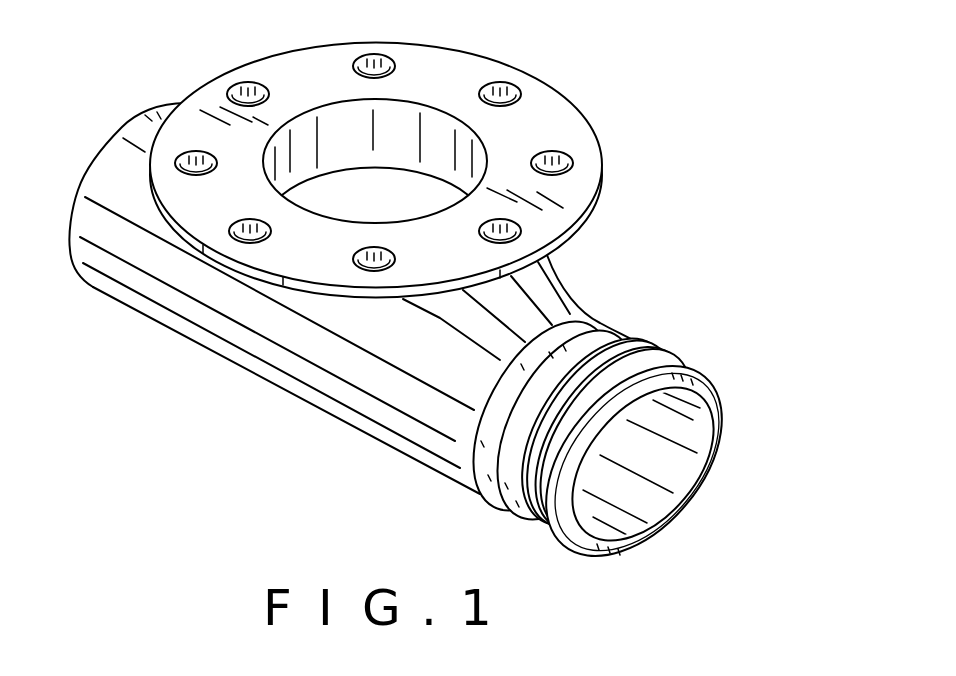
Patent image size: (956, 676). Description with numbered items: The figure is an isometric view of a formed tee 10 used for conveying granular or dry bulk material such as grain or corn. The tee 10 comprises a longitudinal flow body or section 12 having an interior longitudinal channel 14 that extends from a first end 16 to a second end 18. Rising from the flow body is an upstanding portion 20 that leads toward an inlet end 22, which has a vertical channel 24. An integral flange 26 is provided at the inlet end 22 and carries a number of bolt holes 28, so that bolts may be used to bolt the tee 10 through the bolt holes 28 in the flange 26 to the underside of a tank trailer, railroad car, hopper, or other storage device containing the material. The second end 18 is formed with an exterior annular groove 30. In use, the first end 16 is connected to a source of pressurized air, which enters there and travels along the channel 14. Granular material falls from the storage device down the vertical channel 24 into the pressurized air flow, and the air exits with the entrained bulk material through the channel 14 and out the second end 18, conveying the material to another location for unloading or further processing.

The tee 10 is at (425, 298).
The longitudinal flow body 12 is at (318, 350).
The interior longitudinal channel 14 is at (672, 455).
The first end 16 is at (123, 128).
The second end 18 is at (718, 404).
The upstanding portion 20 is at (545, 272).
The inlet end 22 is at (389, 187).
The vertical channel 24 is at (338, 123).
The integral flange 26 is at (570, 127).
The bolt holes 28 is at (243, 86).
The exterior annular groove 30 is at (658, 352).